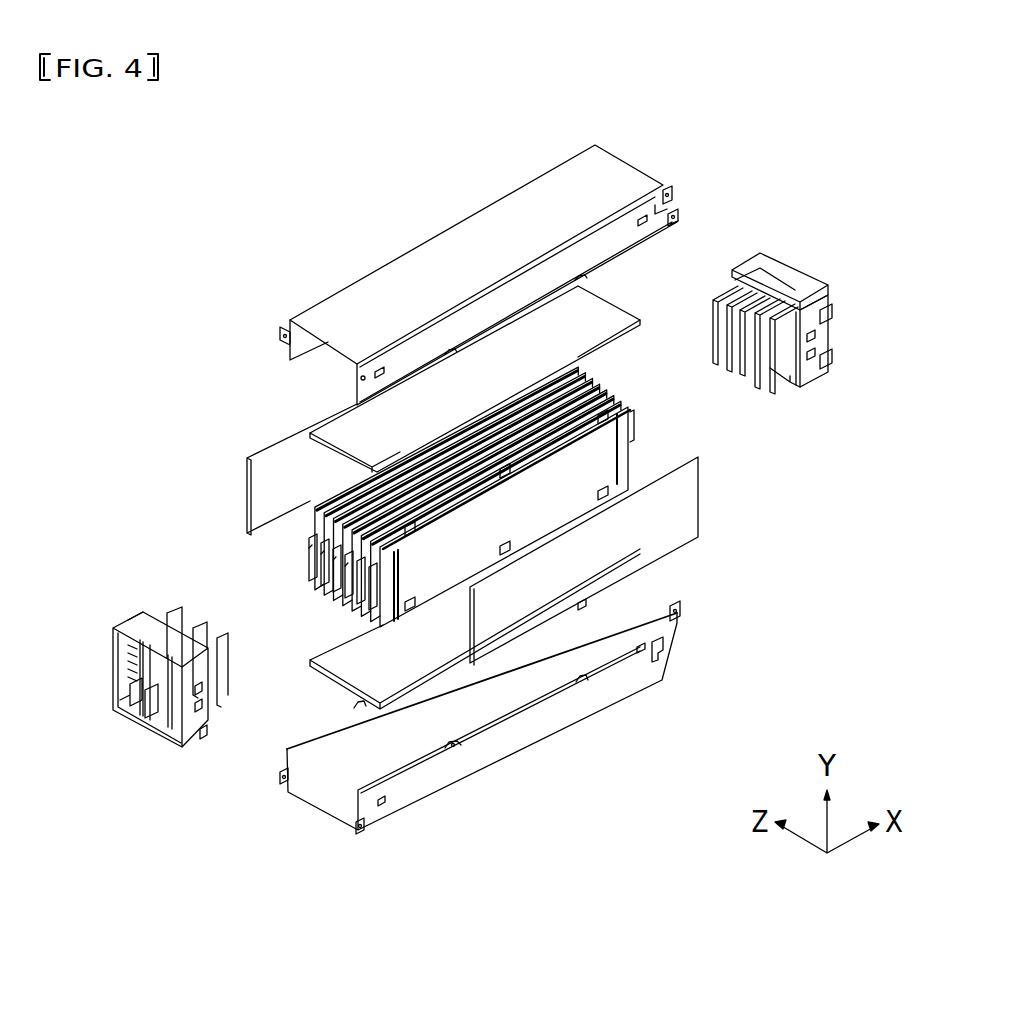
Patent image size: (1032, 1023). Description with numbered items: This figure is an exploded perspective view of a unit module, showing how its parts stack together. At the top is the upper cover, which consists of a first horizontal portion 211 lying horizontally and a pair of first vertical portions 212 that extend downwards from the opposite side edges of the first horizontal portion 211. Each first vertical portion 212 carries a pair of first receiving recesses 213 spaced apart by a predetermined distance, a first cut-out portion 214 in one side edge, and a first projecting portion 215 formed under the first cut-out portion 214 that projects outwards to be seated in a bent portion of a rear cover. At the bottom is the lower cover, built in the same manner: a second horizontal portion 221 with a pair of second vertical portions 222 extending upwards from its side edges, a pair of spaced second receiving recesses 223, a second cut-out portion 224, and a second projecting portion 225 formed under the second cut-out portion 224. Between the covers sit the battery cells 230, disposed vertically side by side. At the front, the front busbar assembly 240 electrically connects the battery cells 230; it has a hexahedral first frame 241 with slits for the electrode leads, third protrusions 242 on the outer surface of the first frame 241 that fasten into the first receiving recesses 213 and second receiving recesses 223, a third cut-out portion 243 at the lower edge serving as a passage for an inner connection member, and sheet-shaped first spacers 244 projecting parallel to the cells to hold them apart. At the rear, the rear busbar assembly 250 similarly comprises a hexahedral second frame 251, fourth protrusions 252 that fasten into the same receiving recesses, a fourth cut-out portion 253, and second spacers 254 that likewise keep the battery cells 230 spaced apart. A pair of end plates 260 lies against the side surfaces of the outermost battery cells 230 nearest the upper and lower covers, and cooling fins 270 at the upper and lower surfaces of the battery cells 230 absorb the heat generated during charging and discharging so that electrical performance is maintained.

The first horizontal portion 211 is at (538, 186).
The first vertical portions 212 is at (663, 185).
The first receiving recesses 213 is at (644, 213).
The first cut-out portion 214 is at (675, 209).
The first projecting portion 215 is at (678, 222).
The second horizontal portion 221 is at (458, 748).
The second vertical portions 222 is at (537, 723).
The second receiving recesses 223 is at (385, 806).
The second cut-out portion 224 is at (660, 658).
The second projecting portion 225 is at (682, 617).
The battery cells 230 is at (636, 438).
The front busbar assembly 240 is at (162, 670).
The first frame 241 is at (128, 616).
The third protrusions 242 is at (206, 704).
The third cut-out portion 243 is at (205, 740).
The first spacers 244 is at (170, 612).
The rear busbar assembly 250 is at (818, 277).
The second frame 251 is at (770, 265).
The fourth protrusions 252 is at (818, 335).
The fourth cut-out portion 253 is at (833, 362).
The second spacers 254 is at (833, 312).
The end plates 260 is at (254, 497).
The cooling fins 270 is at (600, 305).